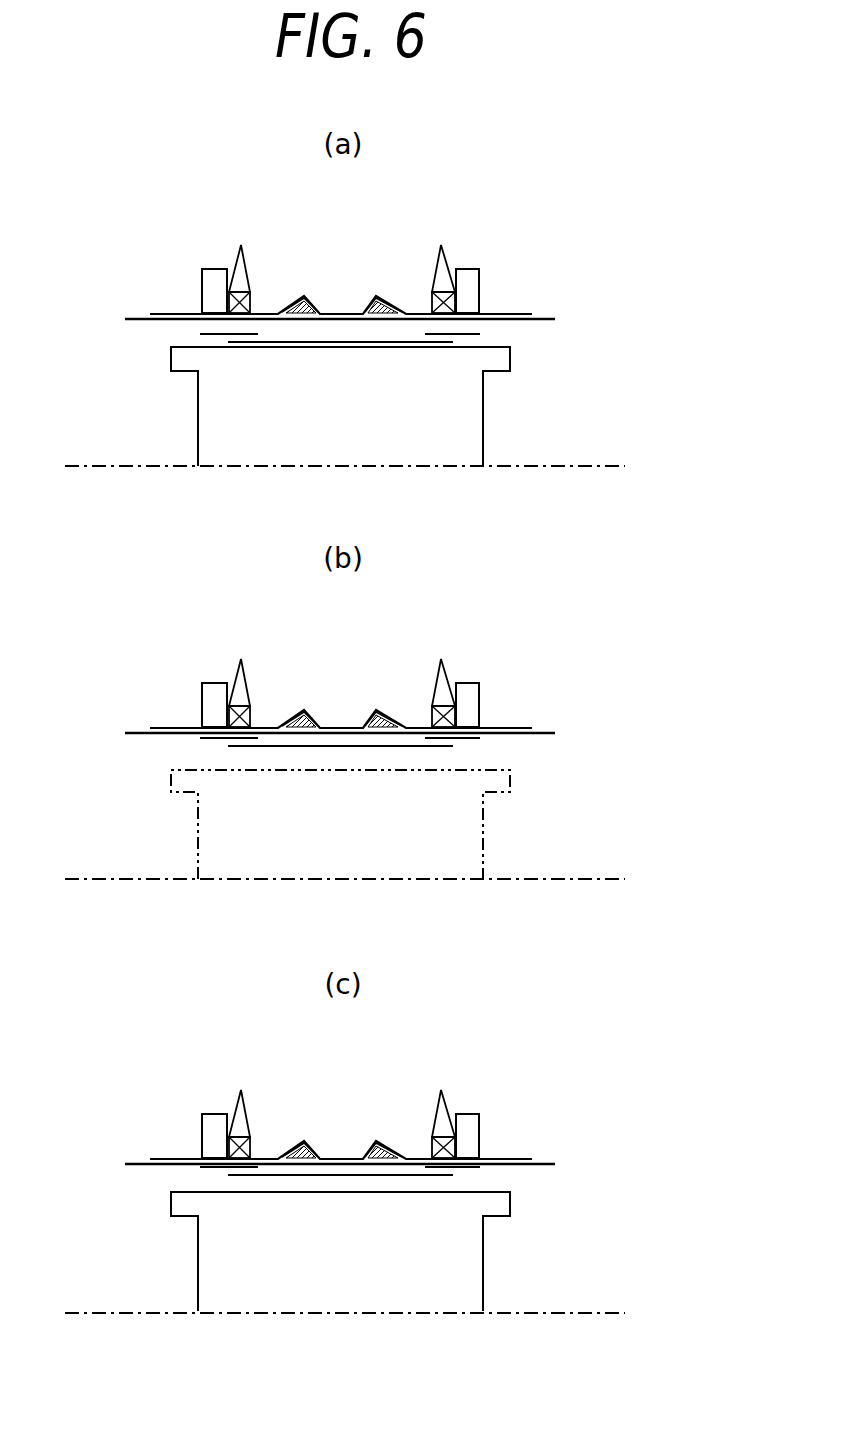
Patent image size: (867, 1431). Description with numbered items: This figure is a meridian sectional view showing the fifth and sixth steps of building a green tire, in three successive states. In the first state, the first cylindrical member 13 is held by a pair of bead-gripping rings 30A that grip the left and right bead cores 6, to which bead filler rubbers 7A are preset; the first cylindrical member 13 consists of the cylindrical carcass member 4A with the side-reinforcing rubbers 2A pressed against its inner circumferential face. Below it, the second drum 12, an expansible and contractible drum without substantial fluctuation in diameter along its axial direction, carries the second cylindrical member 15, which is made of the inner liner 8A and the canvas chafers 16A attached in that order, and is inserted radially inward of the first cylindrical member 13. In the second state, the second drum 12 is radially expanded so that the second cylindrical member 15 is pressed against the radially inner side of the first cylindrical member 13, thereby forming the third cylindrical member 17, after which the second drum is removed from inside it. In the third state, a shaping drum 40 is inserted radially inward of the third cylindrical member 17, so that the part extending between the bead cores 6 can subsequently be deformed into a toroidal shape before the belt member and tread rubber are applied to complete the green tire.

The side-reinforcing rubber 2A is at (302, 304).
The carcass member 4A is at (343, 306).
The bead core 6 is at (252, 302).
The bead filler rubber 7A is at (240, 275).
The inner liner 8A is at (430, 343).
The second drum 12 is at (480, 412).
The first cylindrical member 13 is at (567, 251).
The second cylindrical member 15 is at (538, 338).
The canvas chafer 16A is at (474, 332).
The third cylindrical member 17 is at (574, 658).
The bead-gripping ring 30A is at (210, 272).
The shaping drum 40 is at (475, 1254).